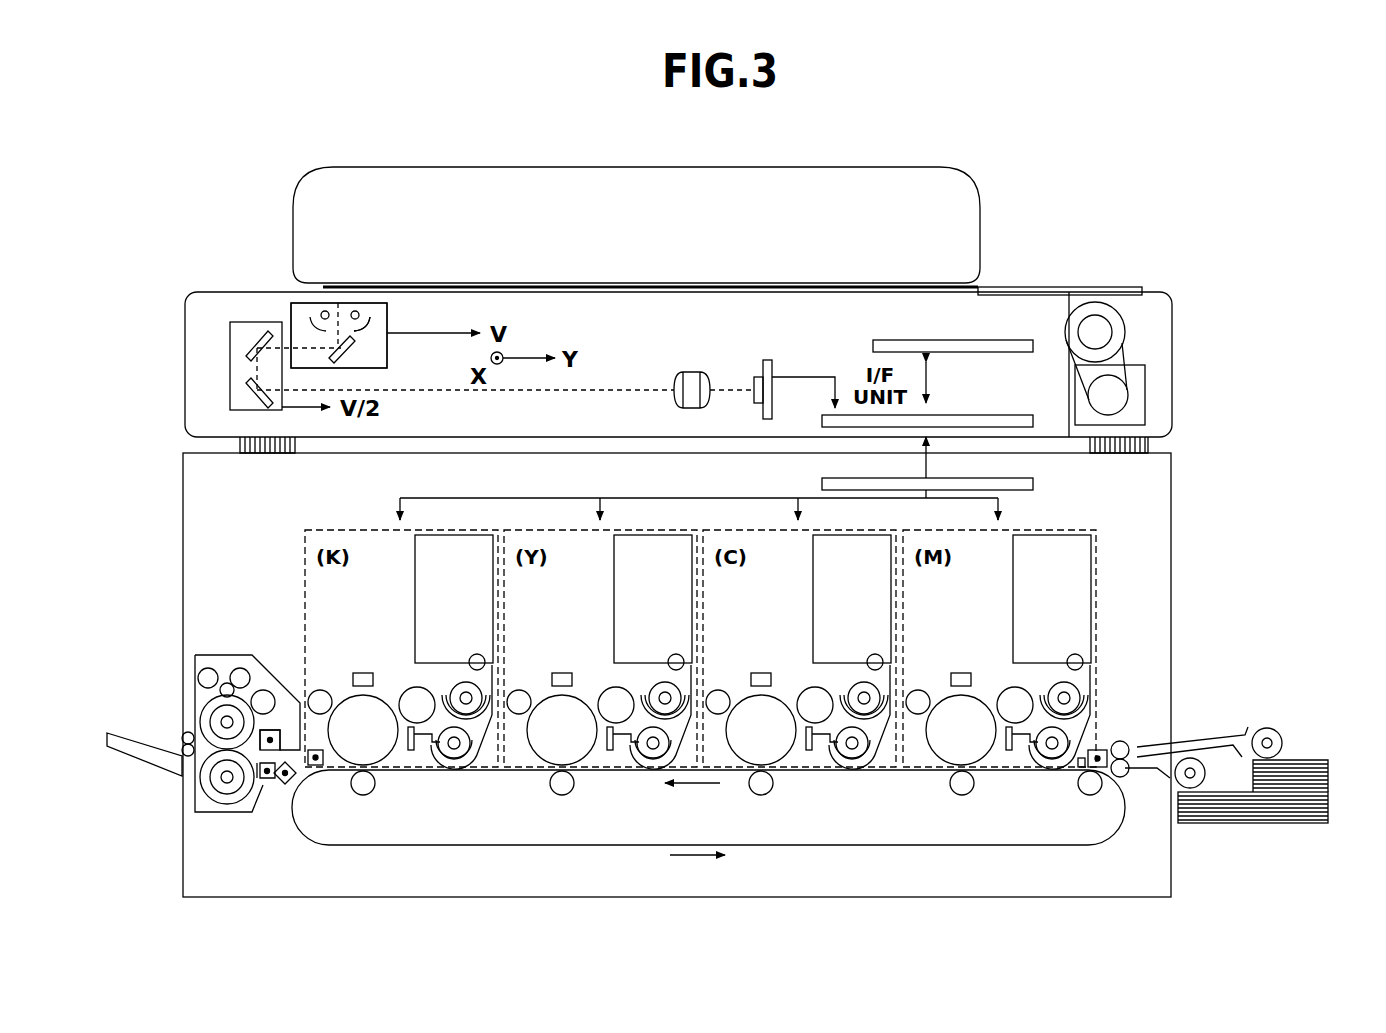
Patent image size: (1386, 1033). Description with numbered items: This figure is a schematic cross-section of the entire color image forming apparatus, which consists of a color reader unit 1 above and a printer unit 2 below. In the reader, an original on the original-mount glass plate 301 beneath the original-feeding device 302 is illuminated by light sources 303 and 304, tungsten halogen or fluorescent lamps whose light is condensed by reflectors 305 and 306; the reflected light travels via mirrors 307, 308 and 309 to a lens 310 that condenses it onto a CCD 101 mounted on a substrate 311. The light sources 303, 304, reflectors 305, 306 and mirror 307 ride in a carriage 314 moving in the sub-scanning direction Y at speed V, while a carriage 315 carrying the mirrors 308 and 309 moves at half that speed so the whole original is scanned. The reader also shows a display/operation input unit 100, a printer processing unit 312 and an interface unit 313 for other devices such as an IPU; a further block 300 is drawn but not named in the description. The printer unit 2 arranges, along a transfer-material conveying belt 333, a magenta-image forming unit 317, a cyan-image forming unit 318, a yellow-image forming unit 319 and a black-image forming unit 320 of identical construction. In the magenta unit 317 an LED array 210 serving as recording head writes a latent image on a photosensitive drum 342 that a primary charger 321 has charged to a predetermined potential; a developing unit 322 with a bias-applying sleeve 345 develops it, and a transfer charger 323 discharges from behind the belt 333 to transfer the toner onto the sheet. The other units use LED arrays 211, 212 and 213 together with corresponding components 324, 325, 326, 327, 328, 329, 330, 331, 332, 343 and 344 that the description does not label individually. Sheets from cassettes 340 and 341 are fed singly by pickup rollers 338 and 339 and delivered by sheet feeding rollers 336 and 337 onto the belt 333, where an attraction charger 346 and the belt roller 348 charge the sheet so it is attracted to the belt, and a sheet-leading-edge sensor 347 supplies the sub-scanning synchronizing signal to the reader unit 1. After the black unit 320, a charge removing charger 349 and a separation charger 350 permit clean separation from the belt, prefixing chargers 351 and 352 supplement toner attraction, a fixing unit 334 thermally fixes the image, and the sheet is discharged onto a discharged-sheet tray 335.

The color reader unit 1 is at (1188, 346).
The printer unit 2 is at (1192, 479).
The display/operation input unit 100 is at (1010, 285).
The CCD 101 is at (754, 385).
The image processing board 300 is at (1035, 484).
The original-mount glass plate 301 is at (392, 283).
The original-feeding device 302 is at (982, 222).
The light source 303 is at (357, 308).
The light source 304 is at (325, 308).
The reflector 305 is at (372, 321).
The reflector 306 is at (302, 321).
The mirror 307 is at (355, 345).
The mirror 308 is at (243, 343).
The mirror 309 is at (230, 400).
The lens 310 is at (690, 371).
The substrate 311 is at (772, 368).
The printer processing unit 312 is at (955, 415).
The interface (I/F) unit 313 is at (958, 340).
The carriage 314 is at (370, 368).
The carriage 315 is at (228, 355).
The magenta-image forming unit 317 is at (1100, 605).
The cyan-image forming unit 318 is at (760, 529).
The yellow-image forming unit 319 is at (560, 529).
The black-image forming unit 320 is at (333, 529).
The primary charger 321 is at (920, 690).
The developing unit 322 is at (1028, 595).
The transfer charger 323 is at (962, 795).
The charger 324 is at (720, 690).
The toner cartridge 325 is at (828, 595).
The transfer roller 326 is at (761, 795).
The charger 327 is at (521, 690).
The toner cartridge 328 is at (630, 595).
The transfer roller 329 is at (562, 795).
The charger 330 is at (322, 690).
The toner cartridge 331 is at (430, 595).
The transfer roller 332 is at (363, 795).
The transfer-material conveying belt 333 is at (442, 845).
The fixing unit 334 is at (210, 655).
The discharged-sheet tray 335 is at (142, 738).
The sheet feeding roller 336 is at (1126, 742).
The sheet feeding roller 337 is at (1112, 778).
The pickup roller 338 is at (1196, 760).
The pickup roller 339 is at (1266, 728).
The cassette 340 is at (1212, 822).
The cassette 341 is at (1310, 760).
The photosensitive drum 342 is at (973, 700).
The photosensitive drum 343 is at (773, 700).
The photosensitive drum 344 is at (574, 700).
The sleeve 345 is at (375, 700).
The attraction charger 346 is at (825, 695).
The sheet-leading-edge sensor 347 is at (626, 695).
The transfer-material-conveying-belt roller 348 is at (427, 695).
The charge removing charger 349 is at (312, 750).
The separation charger 350 is at (292, 778).
The prefixing charger 351 is at (251, 660).
The prefixing charger 352 is at (270, 728).
The LED array 210 is at (956, 673).
The LED array 211 is at (756, 673).
The LED array 212 is at (557, 673).
The LED array 213 is at (358, 673).